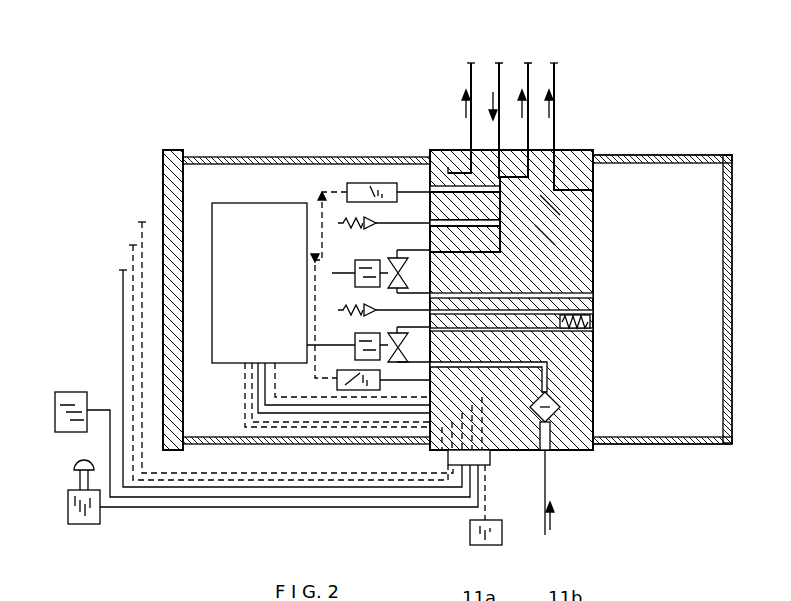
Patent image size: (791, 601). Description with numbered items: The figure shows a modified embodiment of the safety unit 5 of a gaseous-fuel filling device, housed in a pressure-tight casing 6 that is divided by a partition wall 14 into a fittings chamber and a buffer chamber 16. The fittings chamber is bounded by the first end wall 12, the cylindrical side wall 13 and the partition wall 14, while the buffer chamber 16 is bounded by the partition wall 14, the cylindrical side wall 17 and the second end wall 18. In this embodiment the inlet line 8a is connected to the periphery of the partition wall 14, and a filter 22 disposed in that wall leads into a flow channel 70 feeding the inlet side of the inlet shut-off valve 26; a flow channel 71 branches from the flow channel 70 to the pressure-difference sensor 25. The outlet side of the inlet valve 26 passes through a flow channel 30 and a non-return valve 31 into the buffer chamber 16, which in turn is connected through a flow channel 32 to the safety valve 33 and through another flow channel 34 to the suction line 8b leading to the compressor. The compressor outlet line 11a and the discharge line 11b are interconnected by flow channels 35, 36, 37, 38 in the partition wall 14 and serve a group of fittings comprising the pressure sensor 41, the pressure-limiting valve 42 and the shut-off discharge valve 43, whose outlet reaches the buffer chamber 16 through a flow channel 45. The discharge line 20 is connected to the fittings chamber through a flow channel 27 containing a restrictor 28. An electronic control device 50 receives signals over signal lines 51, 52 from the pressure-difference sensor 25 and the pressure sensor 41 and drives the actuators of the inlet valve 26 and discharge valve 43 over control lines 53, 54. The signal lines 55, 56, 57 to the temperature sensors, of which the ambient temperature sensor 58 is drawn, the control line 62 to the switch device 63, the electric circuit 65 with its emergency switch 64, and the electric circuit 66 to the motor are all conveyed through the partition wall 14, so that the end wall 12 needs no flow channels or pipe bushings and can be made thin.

The safety unit 5 is at (330, 142).
The casing 6 is at (612, 145).
The inlet line 8a is at (548, 470).
The suction line 8b is at (556, 110).
The outlet line 11a is at (497, 78).
The discharge line 11b is at (528, 78).
The first end wall 12 is at (163, 162).
The cylindrical side wall 13 is at (205, 437).
The partition wall 14 is at (585, 448).
The buffer chamber 16 is at (707, 427).
The cylindrical side wall 17 is at (663, 444).
The second end wall 18 is at (725, 320).
The discharge line 20 is at (470, 75).
The filter 22 is at (560, 407).
The pressure-difference sensor 25 is at (348, 387).
The inlet shut-off valve 26 is at (385, 362).
The flow channel 27 is at (471, 165).
The restrictor 28 is at (462, 172).
The flow channel 30 is at (578, 325).
The non-return valve 31 is at (560, 333).
The flow channel 32 is at (593, 312).
The safety valve 33 is at (368, 312).
The flow channel 34 is at (593, 190).
The flow channel 35 is at (545, 200).
The flow channel 36 is at (470, 198).
The flow channel 37 is at (468, 232).
The flow channel 38 is at (545, 222).
The pressure sensor 41 is at (360, 183).
The pressure-limiting valve 42 is at (368, 228).
The shut-off discharge valve 43 is at (378, 287).
The flow channel 45 is at (595, 295).
The electronic control device 50 is at (257, 242).
The signal line 51 is at (312, 335).
The signal line 52 is at (320, 192).
The control line 53 is at (315, 303).
The control line 54 is at (330, 272).
The signal line 55 is at (487, 497).
The signal line 56 is at (131, 262).
The signal line 57 is at (140, 228).
The temperature sensor 58 is at (478, 535).
The control line 62 is at (247, 498).
The switch device 63 is at (70, 392).
The emergency switch 64 is at (88, 524).
The electric circuit 65 is at (190, 508).
The electric circuit 66 is at (123, 307).
The flow channel 70 is at (548, 372).
The flow channel 71 is at (503, 380).